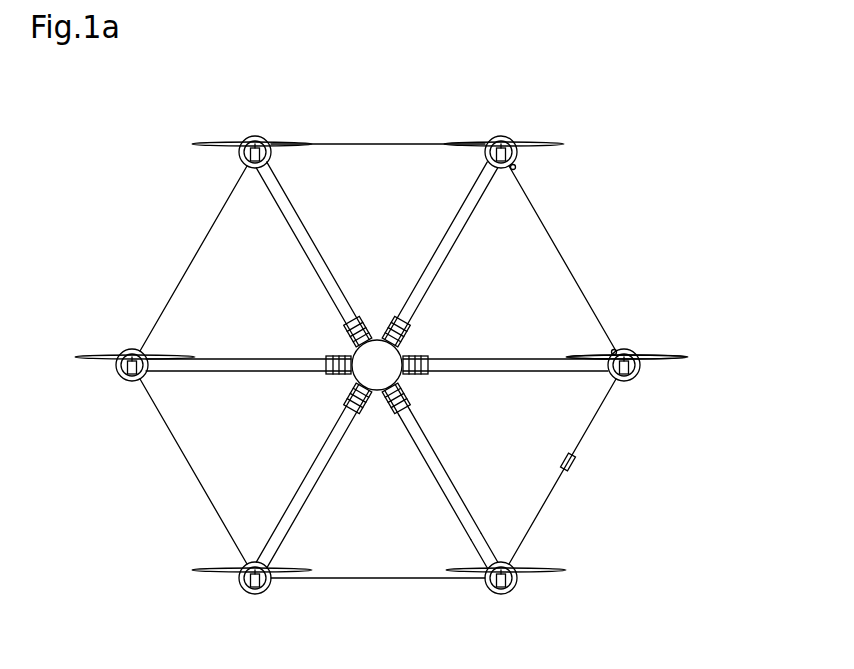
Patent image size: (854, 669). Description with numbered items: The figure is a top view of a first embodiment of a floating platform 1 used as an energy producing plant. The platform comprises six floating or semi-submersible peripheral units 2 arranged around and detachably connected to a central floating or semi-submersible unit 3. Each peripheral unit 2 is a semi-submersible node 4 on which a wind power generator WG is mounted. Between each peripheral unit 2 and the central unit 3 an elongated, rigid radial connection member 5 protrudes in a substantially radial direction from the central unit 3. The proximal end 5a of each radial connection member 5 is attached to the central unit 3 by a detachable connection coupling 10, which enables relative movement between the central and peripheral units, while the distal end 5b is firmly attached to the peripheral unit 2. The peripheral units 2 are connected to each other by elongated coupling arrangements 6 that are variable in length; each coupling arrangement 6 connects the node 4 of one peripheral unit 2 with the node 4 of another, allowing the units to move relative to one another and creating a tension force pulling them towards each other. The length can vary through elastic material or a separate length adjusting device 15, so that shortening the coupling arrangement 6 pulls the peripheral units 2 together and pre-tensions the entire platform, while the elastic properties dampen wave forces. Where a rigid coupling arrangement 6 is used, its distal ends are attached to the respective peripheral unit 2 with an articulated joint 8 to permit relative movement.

The floating platform 1 is at (630, 198).
The floating peripheral unit 2 is at (380, 387).
The central floating unit 3 is at (356, 380).
The semi-submersible node 4 is at (491, 600).
The radial connection member 5 is at (377, 365).
The proximal end 5a is at (408, 388).
The distal end 5b is at (497, 563).
The coupling arrangement 6 is at (383, 143).
The articulated joint 8 is at (513, 170).
The connection coupling 10 is at (350, 340).
The length adjusting device 15 is at (578, 463).
The wind power generator WG is at (645, 356).